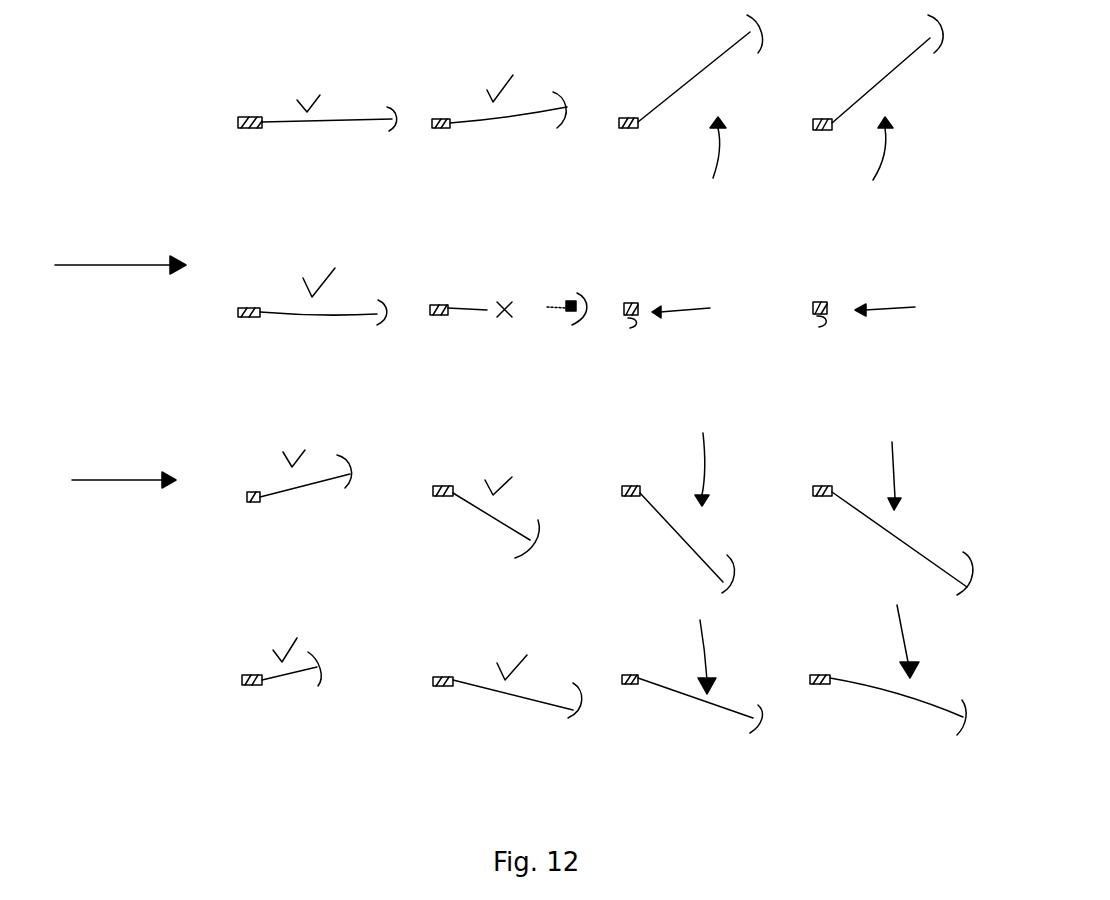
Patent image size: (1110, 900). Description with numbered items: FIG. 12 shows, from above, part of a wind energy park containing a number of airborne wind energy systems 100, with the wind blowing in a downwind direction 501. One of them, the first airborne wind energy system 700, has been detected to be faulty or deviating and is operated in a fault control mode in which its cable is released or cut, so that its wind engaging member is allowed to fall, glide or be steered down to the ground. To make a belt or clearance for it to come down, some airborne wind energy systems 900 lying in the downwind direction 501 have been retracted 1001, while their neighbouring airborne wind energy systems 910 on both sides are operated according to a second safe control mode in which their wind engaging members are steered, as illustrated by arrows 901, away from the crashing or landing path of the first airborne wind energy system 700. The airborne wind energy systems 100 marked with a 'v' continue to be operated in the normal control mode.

The airborne wind energy system 100 is at (262, 98).
The downwind direction 501 is at (160, 257).
The first airborne wind energy system 700 is at (475, 292).
The airborne wind energy system 900 is at (633, 308).
The arrow 901 is at (720, 153).
The neighbouring airborne wind energy system 910 is at (642, 102).
The retraction 1001 is at (693, 312).